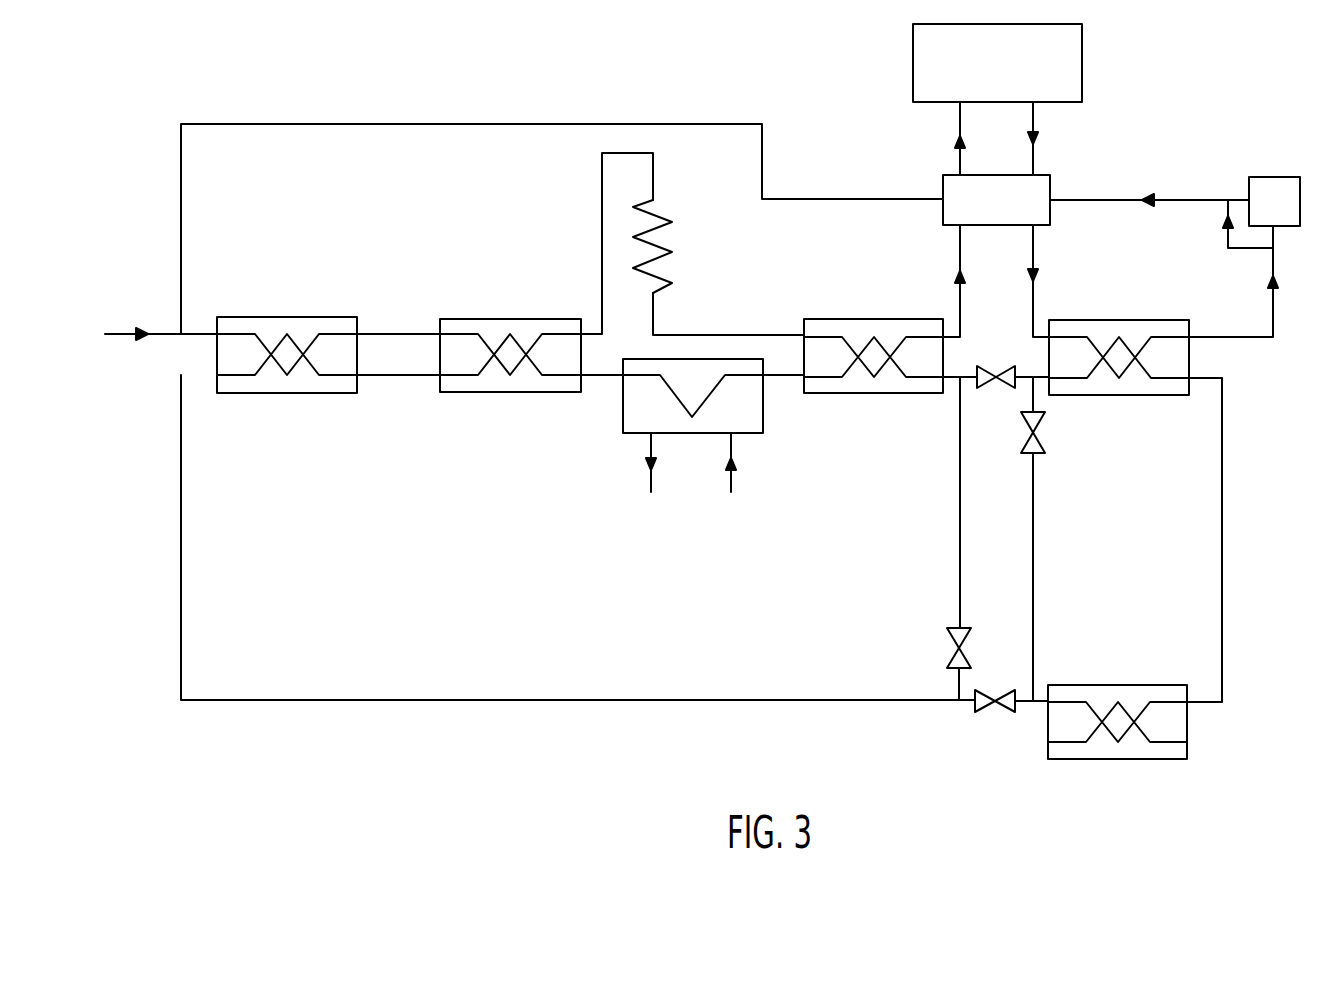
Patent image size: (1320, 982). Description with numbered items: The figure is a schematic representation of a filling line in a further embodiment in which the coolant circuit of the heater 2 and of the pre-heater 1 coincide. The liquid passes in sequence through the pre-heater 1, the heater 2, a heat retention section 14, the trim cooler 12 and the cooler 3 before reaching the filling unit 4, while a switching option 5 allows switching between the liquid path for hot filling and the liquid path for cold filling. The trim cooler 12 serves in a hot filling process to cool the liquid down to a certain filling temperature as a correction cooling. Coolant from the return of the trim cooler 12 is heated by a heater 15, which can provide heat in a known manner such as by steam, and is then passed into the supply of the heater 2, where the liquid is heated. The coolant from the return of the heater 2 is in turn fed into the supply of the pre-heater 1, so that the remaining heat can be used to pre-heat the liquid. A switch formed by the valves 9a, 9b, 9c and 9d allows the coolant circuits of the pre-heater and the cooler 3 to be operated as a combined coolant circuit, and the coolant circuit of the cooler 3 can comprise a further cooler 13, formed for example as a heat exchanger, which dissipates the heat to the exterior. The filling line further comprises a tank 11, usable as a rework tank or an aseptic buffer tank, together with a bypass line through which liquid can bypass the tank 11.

The pre-heater 1 is at (333, 317).
The heater 2 is at (556, 319).
The cooler 3 is at (1165, 320).
The filling unit 4 is at (1083, 50).
The switching option 5 is at (1052, 191).
The valve 9a is at (950, 646).
The valve 9b is at (998, 713).
The valve 9c is at (1045, 428).
The valve 9d is at (1000, 367).
The tank 11 is at (1276, 177).
The trim cooler 12 is at (926, 319).
The further cooler 13 is at (1163, 685).
The heat retention section 14 is at (672, 247).
The heater 15 is at (624, 433).